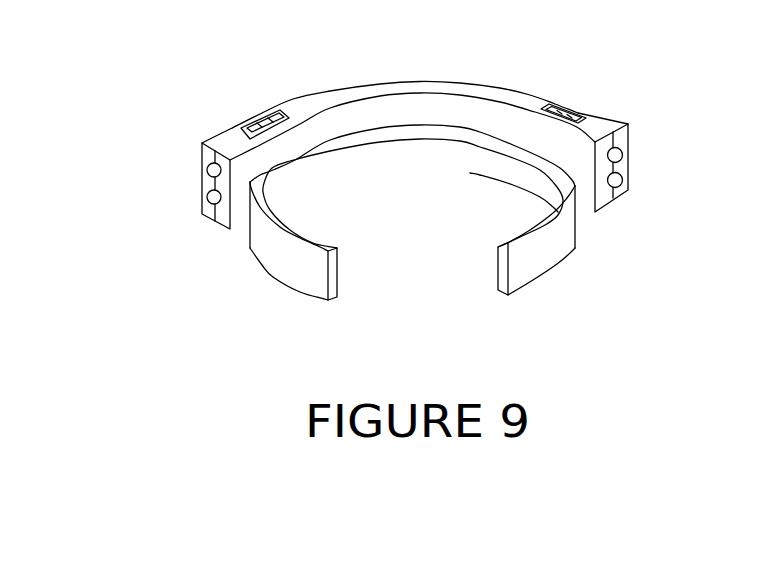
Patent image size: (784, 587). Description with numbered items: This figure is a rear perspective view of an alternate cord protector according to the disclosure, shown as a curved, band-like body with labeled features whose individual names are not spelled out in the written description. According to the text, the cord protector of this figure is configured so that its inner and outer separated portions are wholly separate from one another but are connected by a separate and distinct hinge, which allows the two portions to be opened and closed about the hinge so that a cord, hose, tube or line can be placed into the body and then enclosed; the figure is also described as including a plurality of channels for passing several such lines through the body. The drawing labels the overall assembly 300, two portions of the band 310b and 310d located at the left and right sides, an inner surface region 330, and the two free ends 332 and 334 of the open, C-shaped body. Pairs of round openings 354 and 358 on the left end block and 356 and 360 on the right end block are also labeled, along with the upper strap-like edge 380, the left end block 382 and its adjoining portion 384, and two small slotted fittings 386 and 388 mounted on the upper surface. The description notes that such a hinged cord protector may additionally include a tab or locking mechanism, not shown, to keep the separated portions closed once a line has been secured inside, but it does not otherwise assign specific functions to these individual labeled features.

The head strap assembly 300 is at (540, 72).
The strap portion 310b is at (309, 104).
The strap portion 310d is at (598, 225).
The inner surface of band 330 is at (355, 182).
The first band end 332 is at (332, 298).
The second band end 334 is at (503, 290).
The first opening 354 is at (208, 171).
The second opening 356 is at (622, 155).
The third opening 358 is at (209, 198).
The fourth opening 360 is at (622, 180).
The upper strap 380 is at (429, 80).
The first housing 382 is at (209, 214).
The housing portion 384 is at (228, 229).
The first connector 386 is at (250, 127).
The second connector 388 is at (574, 107).